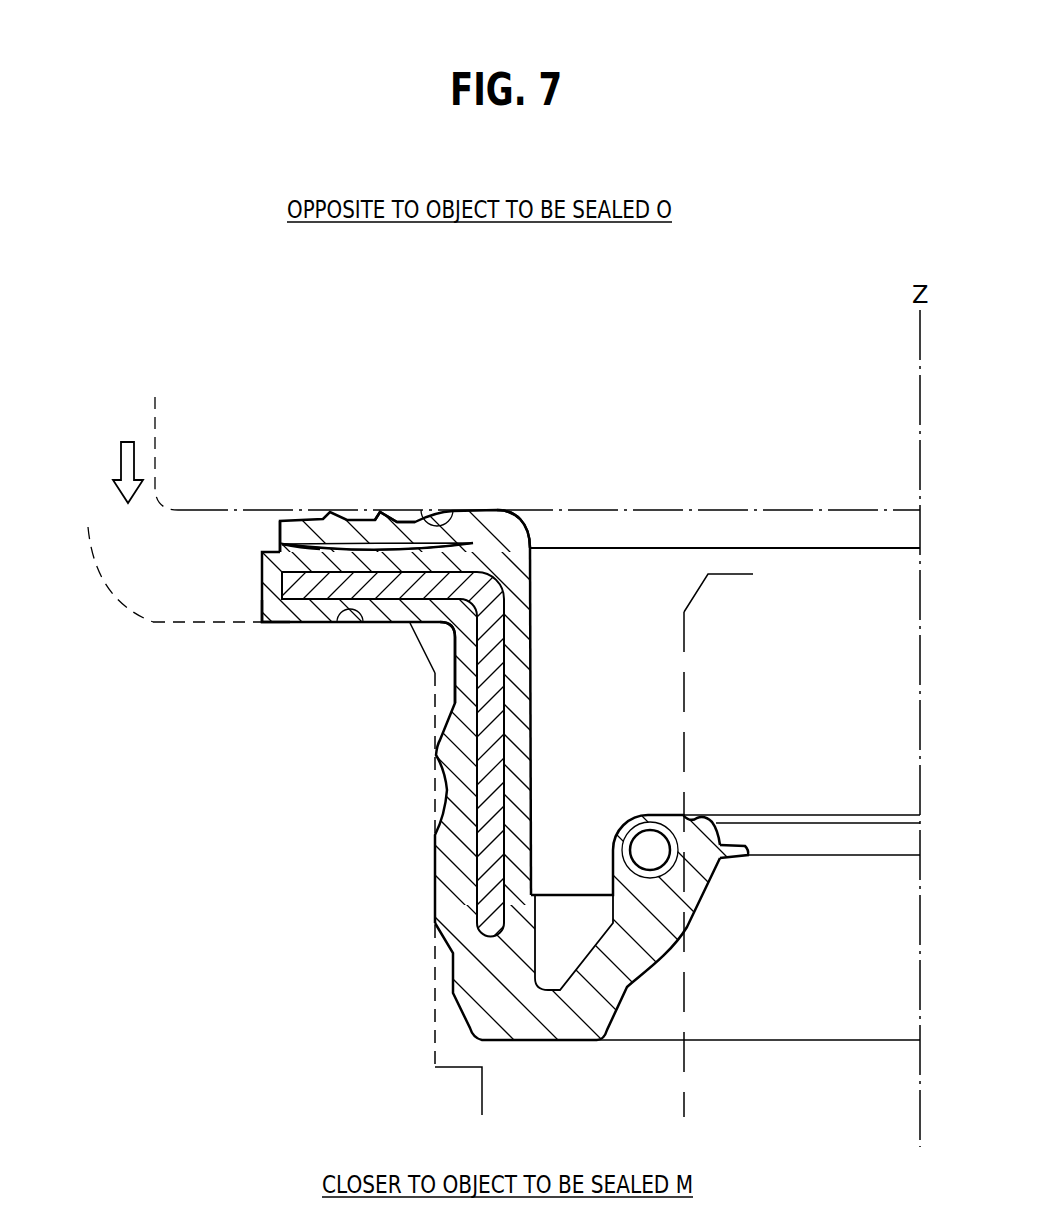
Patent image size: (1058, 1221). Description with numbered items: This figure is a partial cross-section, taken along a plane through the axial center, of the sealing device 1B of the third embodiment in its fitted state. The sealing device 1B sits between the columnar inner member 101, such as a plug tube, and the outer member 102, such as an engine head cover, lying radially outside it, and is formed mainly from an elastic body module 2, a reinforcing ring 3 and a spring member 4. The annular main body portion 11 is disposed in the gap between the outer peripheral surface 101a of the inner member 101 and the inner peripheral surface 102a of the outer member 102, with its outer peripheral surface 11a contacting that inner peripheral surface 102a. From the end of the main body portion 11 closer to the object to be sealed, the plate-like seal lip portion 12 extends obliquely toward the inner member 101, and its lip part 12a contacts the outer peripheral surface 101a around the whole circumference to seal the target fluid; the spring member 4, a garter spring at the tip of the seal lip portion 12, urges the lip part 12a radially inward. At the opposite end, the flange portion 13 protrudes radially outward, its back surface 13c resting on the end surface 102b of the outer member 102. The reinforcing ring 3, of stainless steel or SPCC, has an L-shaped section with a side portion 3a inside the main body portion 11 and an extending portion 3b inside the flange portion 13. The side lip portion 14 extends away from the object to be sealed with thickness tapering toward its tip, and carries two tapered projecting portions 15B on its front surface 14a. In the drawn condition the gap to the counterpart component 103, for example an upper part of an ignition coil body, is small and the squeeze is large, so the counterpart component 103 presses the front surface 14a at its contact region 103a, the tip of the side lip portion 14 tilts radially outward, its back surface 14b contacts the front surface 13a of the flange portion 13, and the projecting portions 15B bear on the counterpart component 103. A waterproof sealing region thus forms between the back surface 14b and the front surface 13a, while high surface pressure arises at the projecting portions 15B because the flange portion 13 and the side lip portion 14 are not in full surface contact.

The sealing device 1B is at (731, 503).
The elastic body module 2 is at (430, 777).
The reinforcing ring 3 is at (476, 830).
The side portion 3a is at (490, 872).
The extending portion 3b is at (327, 592).
The spring member 4 is at (660, 878).
The main body portion 11 is at (520, 845).
The outer peripheral surface 11a is at (435, 903).
The seal lip portion 12 is at (617, 983).
The lip part 12a is at (737, 857).
The flange portion 13 is at (262, 552).
The front surface 13a is at (278, 548).
The back surface 13c is at (267, 625).
The side lip portion 14 is at (402, 533).
The front surface 14a is at (557, 536).
The back surface 14b is at (303, 545).
The projecting portions 15B is at (382, 512).
The inner member 101 is at (683, 692).
The outer peripheral surface 101a is at (683, 770).
The outer member 102 is at (187, 622).
The inner peripheral surface 102a is at (436, 993).
The end surface 102b is at (245, 622).
The counterpart component 103 is at (155, 403).
The cover member contact surface 103a is at (453, 510).